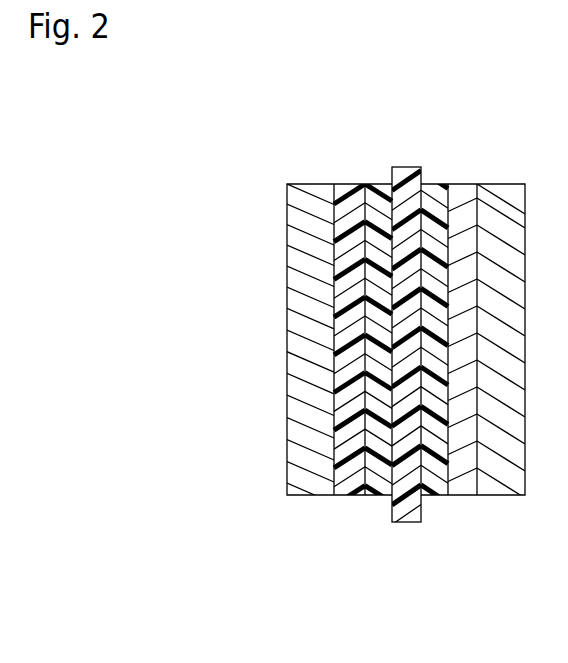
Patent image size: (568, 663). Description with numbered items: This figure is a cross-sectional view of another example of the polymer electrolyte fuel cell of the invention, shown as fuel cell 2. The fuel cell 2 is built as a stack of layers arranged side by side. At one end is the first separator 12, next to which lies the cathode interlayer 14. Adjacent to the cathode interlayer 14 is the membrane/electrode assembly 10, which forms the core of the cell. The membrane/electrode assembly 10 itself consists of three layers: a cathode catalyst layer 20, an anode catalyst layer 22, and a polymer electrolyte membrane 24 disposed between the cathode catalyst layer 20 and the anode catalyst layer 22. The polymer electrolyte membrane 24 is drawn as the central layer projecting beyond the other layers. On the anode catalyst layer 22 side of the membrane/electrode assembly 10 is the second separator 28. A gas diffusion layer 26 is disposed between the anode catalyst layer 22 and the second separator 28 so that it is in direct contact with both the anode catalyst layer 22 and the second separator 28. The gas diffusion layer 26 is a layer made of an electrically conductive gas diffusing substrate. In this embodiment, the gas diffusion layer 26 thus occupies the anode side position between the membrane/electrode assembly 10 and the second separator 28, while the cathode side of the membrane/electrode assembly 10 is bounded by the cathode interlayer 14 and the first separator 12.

The polymer electrolyte fuel cell 2 is at (406, 355).
The membrane/electrode assembly 10 is at (405, 398).
The first separator 12 is at (312, 492).
The cathode interlayer 14 is at (352, 492).
The cathode catalyst layer 20 is at (380, 494).
The anode catalyst layer 22 is at (435, 492).
The polymer electrolyte membrane 24 is at (405, 518).
The gas diffusion layer 26 is at (463, 492).
The second separator 28 is at (503, 492).